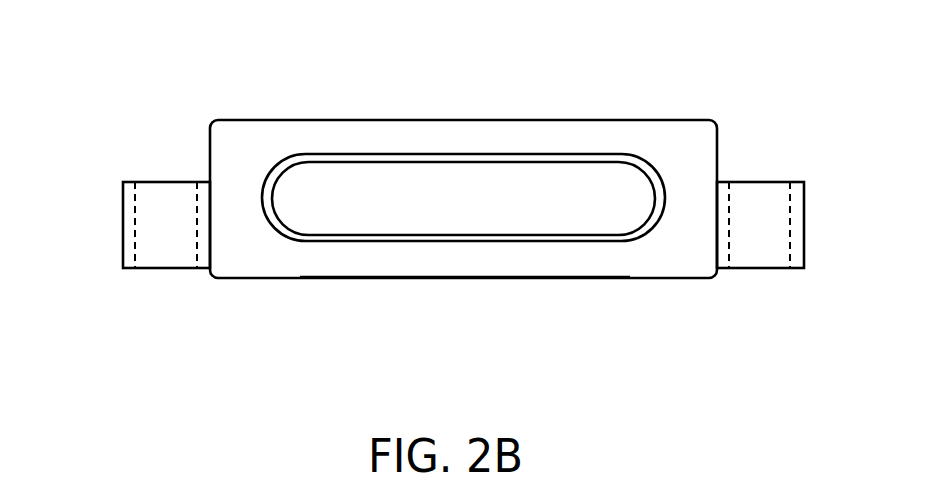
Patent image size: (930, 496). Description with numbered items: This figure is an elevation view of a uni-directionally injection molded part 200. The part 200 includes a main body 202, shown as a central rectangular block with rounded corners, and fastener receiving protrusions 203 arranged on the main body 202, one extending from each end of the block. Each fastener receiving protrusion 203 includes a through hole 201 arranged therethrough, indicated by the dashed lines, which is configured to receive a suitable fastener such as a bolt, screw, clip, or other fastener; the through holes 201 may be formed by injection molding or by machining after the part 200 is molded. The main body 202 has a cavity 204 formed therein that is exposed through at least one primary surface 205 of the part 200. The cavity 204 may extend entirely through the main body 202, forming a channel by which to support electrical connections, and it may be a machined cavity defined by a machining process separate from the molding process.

The uni-directionally injection molded part 200 is at (462, 155).
The through hole 201 is at (150, 184).
The main body 202 is at (712, 119).
The fastener receiving protrusion 203 is at (123, 253).
The cavity 204 is at (473, 212).
The primary surface 205 is at (474, 268).